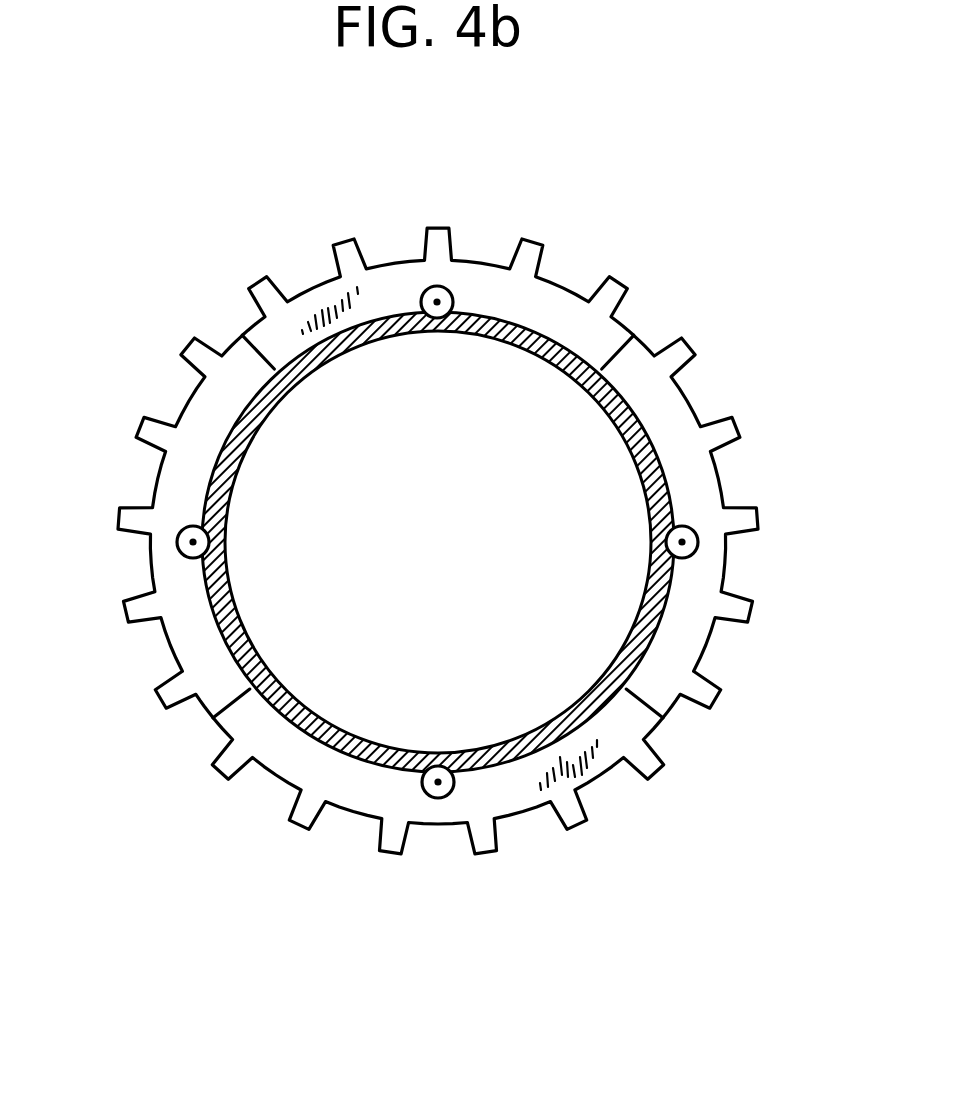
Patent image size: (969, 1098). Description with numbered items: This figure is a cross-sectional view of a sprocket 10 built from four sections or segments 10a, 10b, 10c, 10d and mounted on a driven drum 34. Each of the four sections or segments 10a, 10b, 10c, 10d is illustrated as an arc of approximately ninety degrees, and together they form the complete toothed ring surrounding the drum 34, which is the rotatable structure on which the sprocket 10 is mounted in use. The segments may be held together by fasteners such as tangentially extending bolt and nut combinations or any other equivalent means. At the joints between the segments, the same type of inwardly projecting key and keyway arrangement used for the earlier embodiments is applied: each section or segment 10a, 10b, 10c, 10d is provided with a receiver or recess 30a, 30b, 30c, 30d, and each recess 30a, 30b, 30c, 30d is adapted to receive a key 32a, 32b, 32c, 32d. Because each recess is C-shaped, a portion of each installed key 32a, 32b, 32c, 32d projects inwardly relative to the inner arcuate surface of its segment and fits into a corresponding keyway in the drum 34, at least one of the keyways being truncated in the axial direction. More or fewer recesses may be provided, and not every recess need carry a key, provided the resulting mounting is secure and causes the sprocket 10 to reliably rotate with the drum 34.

The sprocket 10 is at (451, 553).
The sprocket section or segment 10a is at (330, 288).
The sprocket section or segment 10b is at (685, 648).
The sprocket section or segment 10c is at (295, 765).
The sprocket section or segment 10d is at (180, 650).
The recess 30a is at (425, 290).
The recess 30b is at (698, 546).
The recess 30c is at (441, 798).
The recess 30d is at (185, 530).
The key 32a is at (439, 300).
The key 32b is at (681, 542).
The key 32c is at (438, 780).
The key 32d is at (194, 542).
The driven drum 34 is at (596, 388).